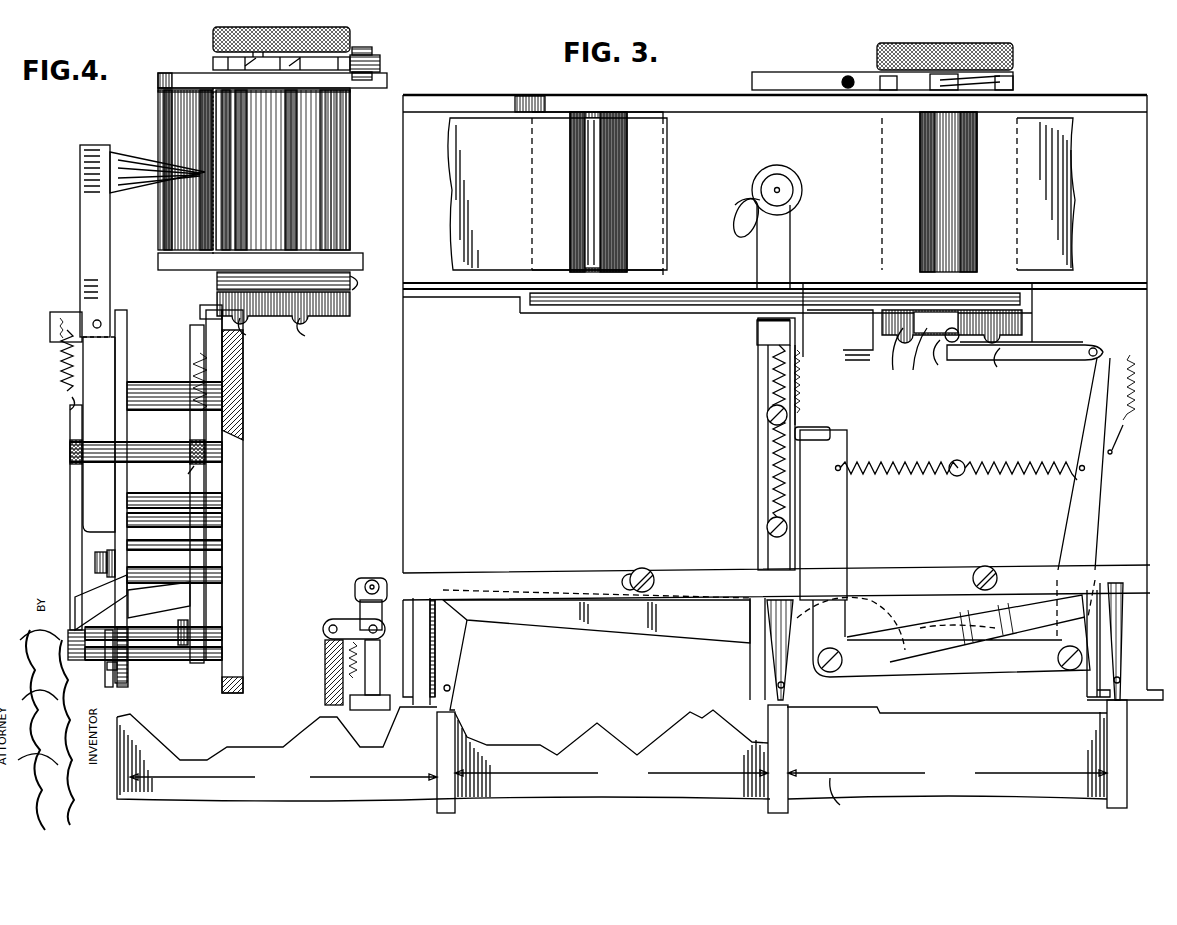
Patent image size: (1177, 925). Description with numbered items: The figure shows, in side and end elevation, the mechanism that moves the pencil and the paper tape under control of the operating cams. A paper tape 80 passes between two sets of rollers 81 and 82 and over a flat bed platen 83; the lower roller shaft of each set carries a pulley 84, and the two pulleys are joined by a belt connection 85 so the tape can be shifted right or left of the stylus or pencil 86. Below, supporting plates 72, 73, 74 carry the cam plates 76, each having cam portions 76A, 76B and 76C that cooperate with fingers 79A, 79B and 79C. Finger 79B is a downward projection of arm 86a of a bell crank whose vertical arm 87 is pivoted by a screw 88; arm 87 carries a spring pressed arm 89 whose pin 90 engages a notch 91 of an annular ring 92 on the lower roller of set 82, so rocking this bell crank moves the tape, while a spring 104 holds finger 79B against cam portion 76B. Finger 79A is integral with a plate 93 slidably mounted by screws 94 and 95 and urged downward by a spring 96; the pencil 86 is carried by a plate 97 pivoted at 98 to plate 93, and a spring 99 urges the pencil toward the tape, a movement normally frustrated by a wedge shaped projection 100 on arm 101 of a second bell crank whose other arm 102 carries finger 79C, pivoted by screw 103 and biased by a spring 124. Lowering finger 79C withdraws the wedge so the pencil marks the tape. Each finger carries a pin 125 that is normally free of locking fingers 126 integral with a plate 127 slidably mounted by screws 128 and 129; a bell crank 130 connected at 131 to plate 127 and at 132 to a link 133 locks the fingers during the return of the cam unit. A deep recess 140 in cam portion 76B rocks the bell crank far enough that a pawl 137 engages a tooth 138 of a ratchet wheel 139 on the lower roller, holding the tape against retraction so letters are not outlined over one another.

In FIG. 3, the supporting plate 72 is at (438, 755).
In FIG. 3, the supporting plate 73 is at (778, 722).
In FIG. 3, the supporting plate 74 is at (1115, 738).
In FIG. 3, the cam plate 76 is at (847, 796).
In FIG. 3, the cam portion 76A is at (611, 774).
In FIG. 4, the outer cam portion 76B is at (283, 778).
In FIG. 3, the cam portion 76C is at (947, 774).
In FIG. 3, the finger 79A is at (770, 642).
In FIG. 3, the finger 79B is at (455, 676).
In FIG. 4, the finger 79C is at (122, 625).
In FIG. 3, the finger 79C is at (1092, 672).
In FIG. 4, the paper tape 80 is at (222, 193).
In FIG. 3, the paper tape 80 is at (472, 195).
In FIG. 4, the set of rollers 81 is at (175, 185).
In FIG. 3, the set of rollers 81 is at (588, 130).
In FIG. 4, the set of rollers 82 is at (240, 110).
In FIG. 3, the set of rollers 82 is at (968, 145).
In FIG. 4, the flat bed platen 83 is at (215, 88).
In FIG. 3, the flat bed platen 83 is at (712, 110).
In FIG. 4, the pulley 84 is at (345, 277).
In FIG. 3, the pulley 84 is at (570, 315).
In FIG. 4, the belt connection 85 is at (257, 275).
In FIG. 3, the belt connection 85 is at (695, 302).
In FIG. 4, the stylus or pencil 86 is at (205, 170).
In FIG. 3, the stylus or pencil 86 is at (772, 186).
In FIG. 3, the bell crank arm 86a is at (648, 632).
In FIG. 4, the vertical arm of bell crank 87 is at (195, 562).
In FIG. 3, the vertical arm of bell crank 87 is at (1075, 518).
In FIG. 4, the screw 88 is at (182, 648).
In FIG. 3, the screw 88 is at (1056, 656).
In FIG. 4, the spring pressed arm 89 is at (205, 320).
In FIG. 3, the spring pressed arm 89 is at (1000, 368).
In FIG. 4, the pin 90 is at (240, 322).
In FIG. 3, the pin 90 is at (945, 355).
In FIG. 4, the notch 91 is at (290, 315).
In FIG. 3, the notch 91 is at (905, 355).
In FIG. 4, the annular ring 92 is at (345, 312).
In FIG. 3, the annular ring 92 is at (1022, 327).
In FIG. 4, the plate 93 is at (122, 425).
In FIG. 3, the plate 93 is at (765, 515).
In FIG. 4, the screw 94 is at (152, 390).
In FIG. 3, the screw 94 is at (769, 410).
In FIG. 4, the screw 95 is at (212, 508).
In FIG. 3, the screw 95 is at (769, 533).
In FIG. 4, the spring 96 is at (62, 385).
In FIG. 3, the spring 96 is at (770, 432).
In FIG. 4, the plate 97 is at (100, 243).
In FIG. 3, the plate 97 is at (765, 253).
In FIG. 4, the pivot 98 is at (98, 318).
In FIG. 3, the pivot 98 is at (755, 332).
In FIG. 4, the spring 99 is at (62, 355).
In FIG. 3, the spring 99 is at (803, 381).
In FIG. 4, the wedge shaped projection 100 is at (70, 403).
In FIG. 3, the wedge shaped projection 100 is at (826, 430).
In FIG. 4, the bell crank arm 101 is at (78, 522).
In FIG. 3, the bell crank arm 101 is at (834, 498).
In FIG. 4, the bell crank arm 102 is at (125, 585).
In FIG. 3, the bell crank arm 102 is at (950, 612).
In FIG. 4, the screw 103 is at (95, 605).
In FIG. 3, the screw 103 is at (838, 652).
In FIG. 4, the spring 104 is at (190, 474).
In FIG. 3, the spring 104 is at (1010, 465).
In FIG. 4, the spring 124 is at (88, 468).
In FIG. 3, the spring 124 is at (905, 465).
In FIG. 4, the pin 125 is at (125, 690).
In FIG. 3, the pin 125 is at (452, 694).
In FIG. 4, the locking finger 126 is at (108, 690).
In FIG. 3, the locking finger 126 is at (1095, 600).
In FIG. 3, the plate 127 is at (583, 576).
In FIG. 3, the screw 128 is at (722, 570).
In FIG. 4, the screw 129 is at (95, 558).
In FIG. 3, the screw 129 is at (980, 568).
In FIG. 4, the bell crank 130 is at (365, 605).
In FIG. 4, the connection 131 is at (368, 582).
In FIG. 4, the connection 132 is at (323, 630).
In FIG. 4, the link 133 is at (328, 688).
In FIG. 4, the pawl 137 is at (372, 64).
In FIG. 3, the pawl 137 is at (815, 78).
In FIG. 4, the tooth 138 is at (250, 64).
In FIG. 3, the tooth 138 is at (950, 80).
In FIG. 4, the ratchet wheel 139 is at (262, 65).
In FIG. 3, the ratchet wheel 139 is at (912, 76).
In FIG. 4, the deep recess 140 is at (196, 762).